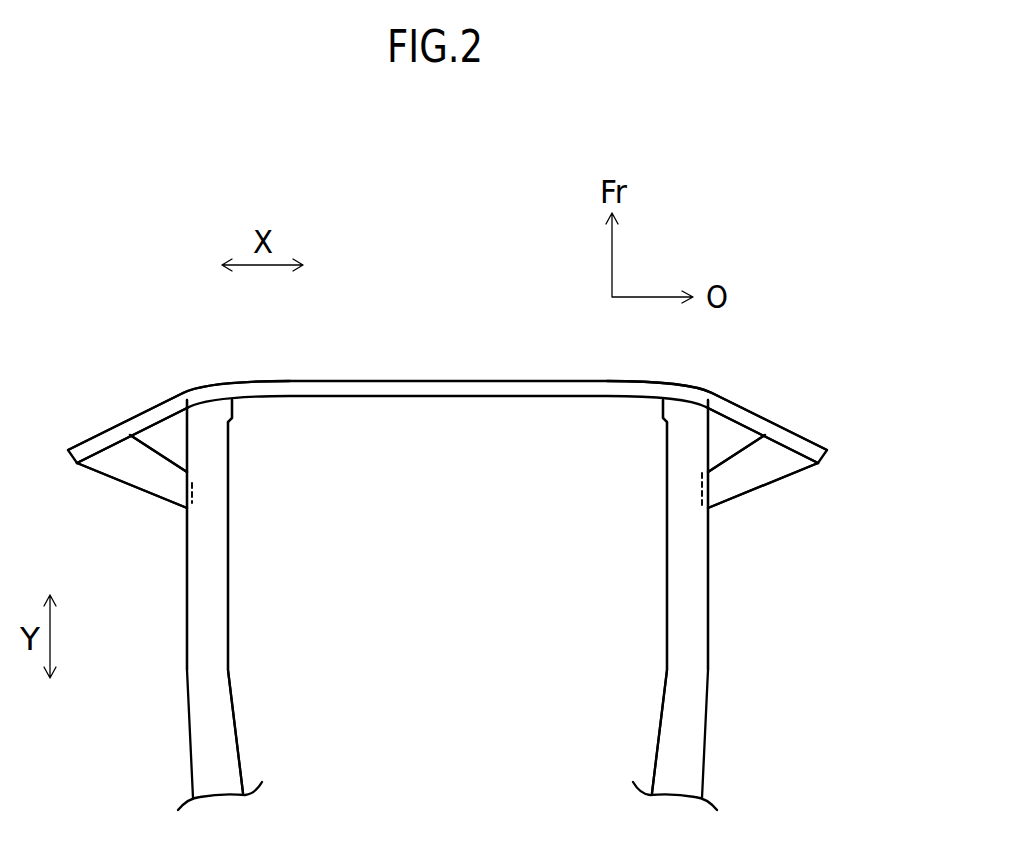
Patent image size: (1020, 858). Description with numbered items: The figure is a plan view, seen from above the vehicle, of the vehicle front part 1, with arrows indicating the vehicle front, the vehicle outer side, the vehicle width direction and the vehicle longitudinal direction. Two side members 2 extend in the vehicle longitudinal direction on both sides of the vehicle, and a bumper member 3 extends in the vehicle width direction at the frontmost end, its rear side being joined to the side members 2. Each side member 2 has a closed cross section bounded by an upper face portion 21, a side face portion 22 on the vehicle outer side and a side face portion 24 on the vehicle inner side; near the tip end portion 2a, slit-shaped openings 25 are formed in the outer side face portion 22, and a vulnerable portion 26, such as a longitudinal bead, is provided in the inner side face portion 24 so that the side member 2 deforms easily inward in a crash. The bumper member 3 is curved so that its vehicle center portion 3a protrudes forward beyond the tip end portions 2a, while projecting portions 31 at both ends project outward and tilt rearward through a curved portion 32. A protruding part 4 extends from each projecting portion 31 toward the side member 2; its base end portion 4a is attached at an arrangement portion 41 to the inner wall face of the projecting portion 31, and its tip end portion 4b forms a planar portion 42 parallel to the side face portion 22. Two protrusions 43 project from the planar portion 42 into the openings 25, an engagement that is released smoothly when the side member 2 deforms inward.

The vehicle front part 1 is at (495, 261).
The side member 2 is at (174, 700).
The tip end portion 2a is at (205, 400).
The upper face portion 21 is at (232, 745).
The side face portion on the vehicle outer side 22 is at (185, 643).
The side face portion on the vehicle inner side 24 is at (228, 642).
The slit-shaped opening 25 is at (196, 495).
The vulnerable portion 26 is at (232, 420).
The bumper member 3 is at (339, 369).
The vehicle center portion 3a is at (437, 380).
The projecting portion 31 is at (132, 413).
The curved portion 32 is at (170, 400).
The protruding part 4 is at (124, 495).
The base end portion 4a is at (93, 463).
The tip end portion 4b is at (177, 508).
The arrangement portion 41 is at (102, 438).
The planar portion 42 is at (193, 480).
The protrusion 43 is at (196, 494).